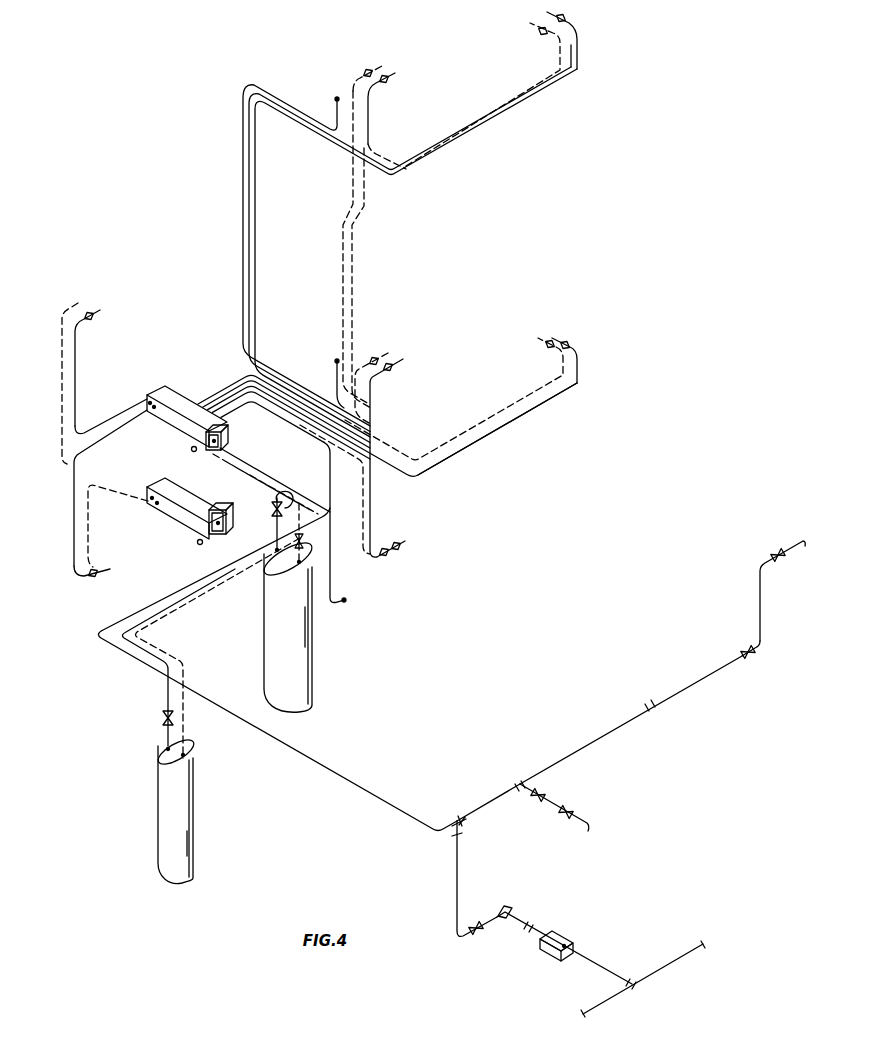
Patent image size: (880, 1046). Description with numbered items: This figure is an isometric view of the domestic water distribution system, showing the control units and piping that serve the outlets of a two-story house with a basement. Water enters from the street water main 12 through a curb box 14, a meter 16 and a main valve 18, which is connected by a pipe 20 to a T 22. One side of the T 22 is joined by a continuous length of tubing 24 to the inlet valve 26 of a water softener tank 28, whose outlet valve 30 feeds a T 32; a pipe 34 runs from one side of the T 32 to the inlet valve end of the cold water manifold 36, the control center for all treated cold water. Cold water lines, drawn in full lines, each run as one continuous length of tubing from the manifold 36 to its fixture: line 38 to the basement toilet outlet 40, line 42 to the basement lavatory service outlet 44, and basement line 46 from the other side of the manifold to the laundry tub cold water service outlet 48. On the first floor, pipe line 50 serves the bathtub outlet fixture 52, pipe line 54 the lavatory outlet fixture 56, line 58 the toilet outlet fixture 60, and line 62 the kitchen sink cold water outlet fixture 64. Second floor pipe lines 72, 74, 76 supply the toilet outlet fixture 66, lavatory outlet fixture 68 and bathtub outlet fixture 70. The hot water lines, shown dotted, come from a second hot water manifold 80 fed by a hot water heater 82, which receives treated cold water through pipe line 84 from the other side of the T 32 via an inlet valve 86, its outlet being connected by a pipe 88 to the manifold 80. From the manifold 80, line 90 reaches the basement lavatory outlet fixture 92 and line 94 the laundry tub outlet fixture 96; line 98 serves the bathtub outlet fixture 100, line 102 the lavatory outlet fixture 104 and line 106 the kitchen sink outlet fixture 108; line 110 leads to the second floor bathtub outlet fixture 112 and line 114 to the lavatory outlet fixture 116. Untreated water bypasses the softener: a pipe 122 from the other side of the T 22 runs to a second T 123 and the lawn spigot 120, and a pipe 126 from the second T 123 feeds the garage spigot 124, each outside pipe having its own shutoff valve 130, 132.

The street water main 12 is at (672, 962).
The curb box 14 is at (572, 935).
The meter 16 is at (504, 903).
The main valve 18 is at (478, 938).
The pipe 20 is at (455, 889).
The T 22 is at (458, 816).
The tubing 24 is at (336, 768).
The inlet valve 26 is at (270, 510).
The water softener tank 28 is at (314, 655).
The valve 30 is at (303, 540).
The T 32 is at (299, 517).
The pipe 34 is at (329, 455).
The cold water manifold 36 is at (178, 428).
The line 38 is at (224, 424).
The basement toilet outlet 40 is at (347, 599).
The line 42 is at (246, 399).
The basement lavatory service outlet 44 is at (398, 548).
The basement line 46 is at (114, 437).
The cold water service outlet 48 is at (85, 580).
The pipe line 50 is at (452, 449).
The bathtub outlet fixture 52 is at (565, 338).
The pipe line 54 is at (371, 418).
The lavatory outlet fixture 56 is at (392, 363).
The line 58 is at (275, 378).
The toilet outlet fixture 60 is at (337, 358).
The line 62 is at (122, 410).
The cold water outlet fixture 64 is at (96, 313).
The toilet outlet fixture 66 is at (337, 96).
The lavatory outlet fixture 68 is at (390, 80).
The bathtub outlet fixture 70 is at (572, 20).
The pipe line 72 is at (242, 300).
The pipe line 74 is at (257, 222).
The pipe line 76 is at (250, 170).
The hot water manifold 80 is at (191, 531).
The hot water heater 82 is at (190, 799).
The pipe line 84 is at (192, 590).
The inlet valve 86 is at (162, 718).
The pipe 88 is at (186, 666).
The line 90 is at (362, 520).
The basement lavatory outlet fixture 92 is at (383, 546).
The line 94 is at (128, 505).
The laundry tub outlet fixture 96 is at (100, 570).
The line 98 is at (470, 432).
The bathtub outlet fixture 100 is at (549, 345).
The line 102 is at (368, 400).
The lavatory outlet fixture 104 is at (376, 356).
The line 106 is at (62, 462).
The kitchen sink outlet fixture 108 is at (80, 330).
The line 110 is at (352, 302).
The bathtub outlet fixture 112 is at (540, 36).
The line 114 is at (342, 246).
The lavatory outlet fixture 116 is at (378, 58).
The lawn spigot 120 is at (588, 823).
The pipe 122 is at (490, 805).
The second T 123 is at (516, 782).
The garage spigot 124 is at (800, 540).
The pipe 126 is at (616, 735).
The shutoff valve 130 is at (543, 795).
The shutoff valve 132 is at (750, 655).